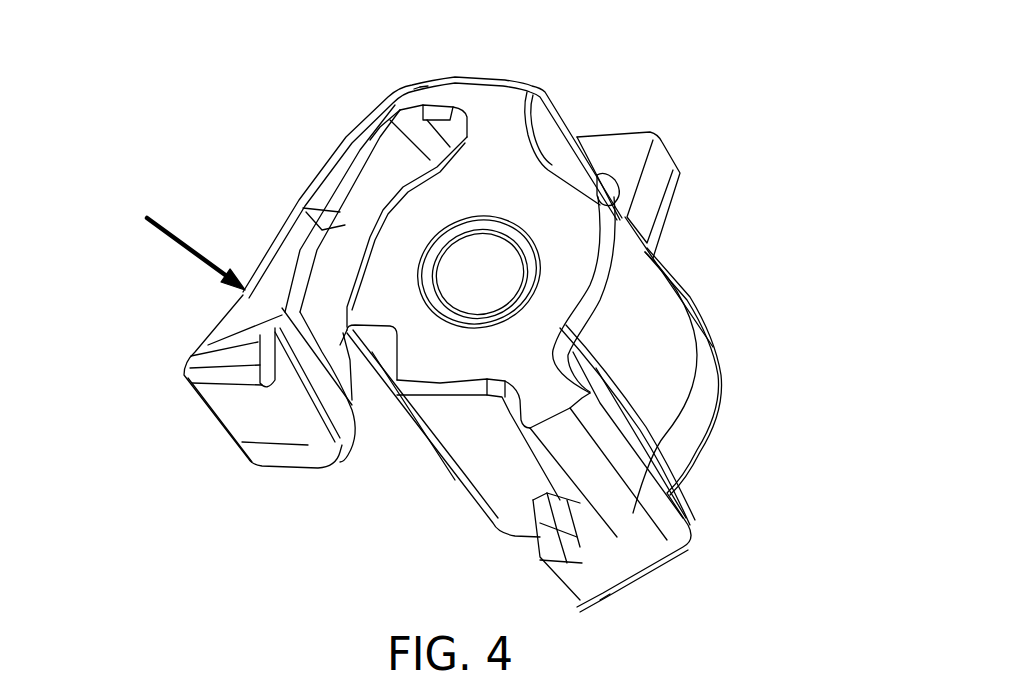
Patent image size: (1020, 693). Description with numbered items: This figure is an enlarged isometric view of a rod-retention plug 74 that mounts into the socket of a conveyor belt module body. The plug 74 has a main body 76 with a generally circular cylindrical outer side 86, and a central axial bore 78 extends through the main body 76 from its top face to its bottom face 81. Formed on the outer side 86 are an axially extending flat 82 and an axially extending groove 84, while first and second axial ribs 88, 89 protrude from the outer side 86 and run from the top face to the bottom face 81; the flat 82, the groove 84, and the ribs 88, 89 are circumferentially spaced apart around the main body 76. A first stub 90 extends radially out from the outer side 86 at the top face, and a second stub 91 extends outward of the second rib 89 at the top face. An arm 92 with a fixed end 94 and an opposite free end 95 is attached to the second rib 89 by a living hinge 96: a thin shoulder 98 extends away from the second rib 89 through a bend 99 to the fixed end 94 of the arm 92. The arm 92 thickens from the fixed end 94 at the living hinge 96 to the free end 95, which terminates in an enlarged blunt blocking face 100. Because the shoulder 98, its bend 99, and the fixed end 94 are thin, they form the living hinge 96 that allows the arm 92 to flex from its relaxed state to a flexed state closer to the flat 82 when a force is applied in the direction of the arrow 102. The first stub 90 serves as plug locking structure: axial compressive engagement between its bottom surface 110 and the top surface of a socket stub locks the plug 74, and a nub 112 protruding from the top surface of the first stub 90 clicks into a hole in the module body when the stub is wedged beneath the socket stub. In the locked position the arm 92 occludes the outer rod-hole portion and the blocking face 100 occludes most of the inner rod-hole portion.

The rod-retention plug 74 is at (197, 63).
The main body 76 is at (663, 337).
The central axial bore 78 is at (483, 280).
The bottom face 81 is at (561, 282).
The flat 82 is at (363, 253).
The groove 84 is at (380, 353).
The outer side 86 is at (653, 393).
The first axial rib 88 is at (637, 503).
The second axial rib 89 is at (483, 107).
The first stub 90 is at (572, 573).
The second stub 91 is at (653, 163).
The arm 92 is at (343, 173).
The fixed end 94 is at (397, 93).
The free end 95 is at (193, 353).
The living hinge 96 is at (429, 91).
The shoulder 98 is at (417, 89).
The bend 99 is at (423, 90).
The blocking face 100 is at (233, 410).
The arrow 102 is at (178, 233).
The bottom surface 110 is at (563, 540).
The nub 112 is at (600, 603).